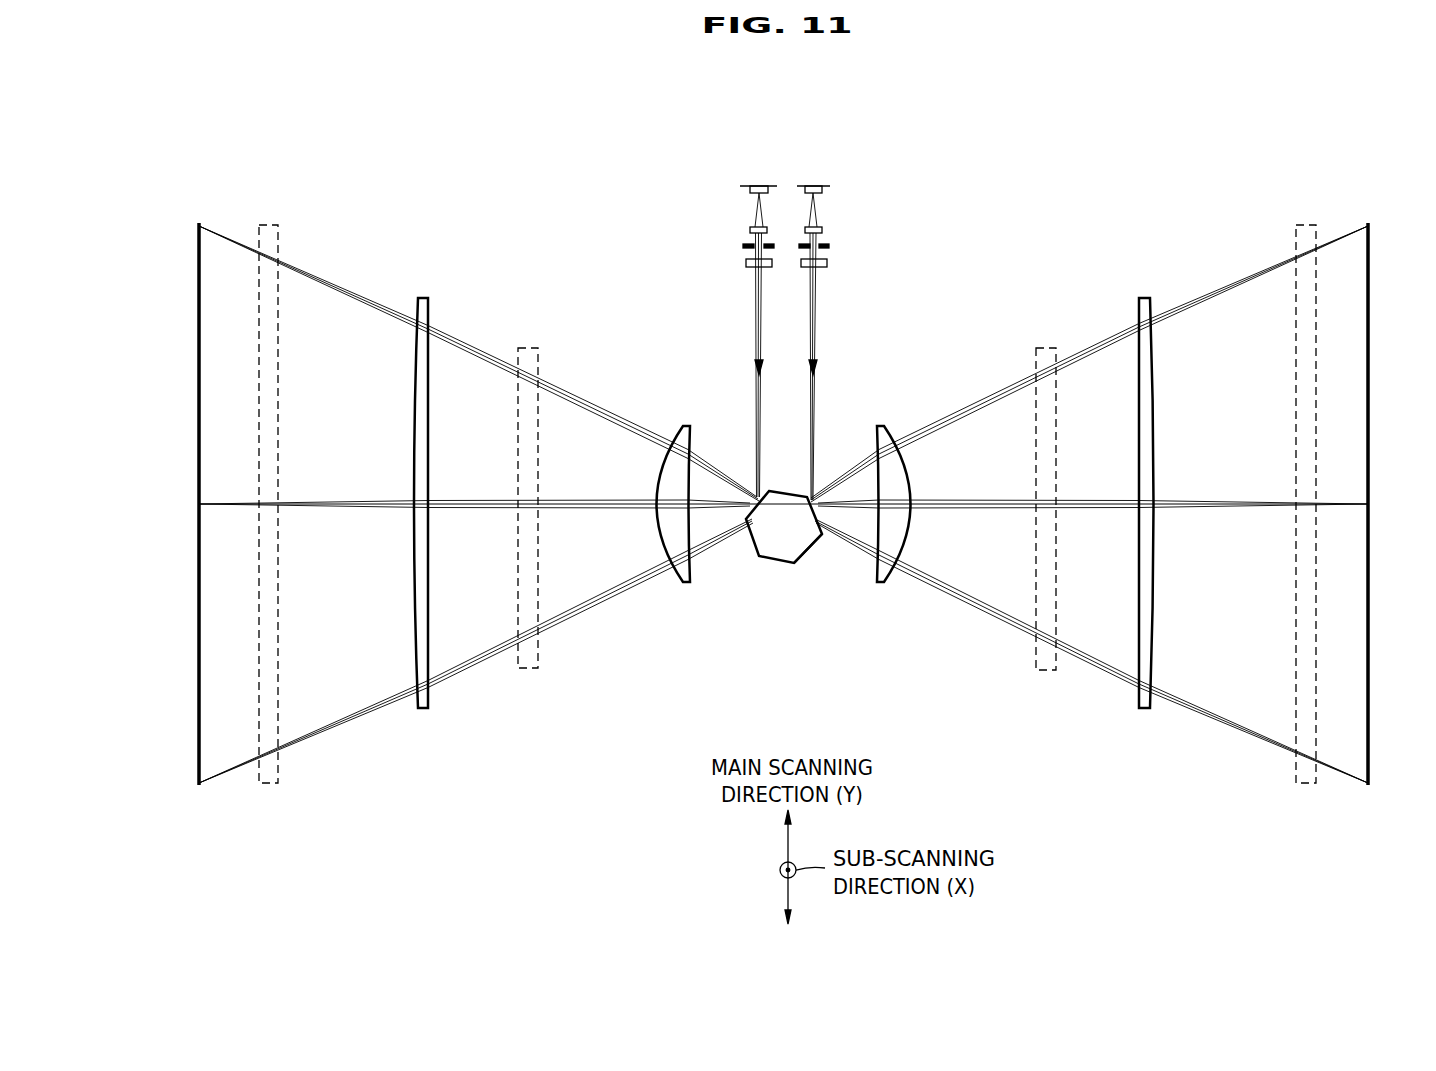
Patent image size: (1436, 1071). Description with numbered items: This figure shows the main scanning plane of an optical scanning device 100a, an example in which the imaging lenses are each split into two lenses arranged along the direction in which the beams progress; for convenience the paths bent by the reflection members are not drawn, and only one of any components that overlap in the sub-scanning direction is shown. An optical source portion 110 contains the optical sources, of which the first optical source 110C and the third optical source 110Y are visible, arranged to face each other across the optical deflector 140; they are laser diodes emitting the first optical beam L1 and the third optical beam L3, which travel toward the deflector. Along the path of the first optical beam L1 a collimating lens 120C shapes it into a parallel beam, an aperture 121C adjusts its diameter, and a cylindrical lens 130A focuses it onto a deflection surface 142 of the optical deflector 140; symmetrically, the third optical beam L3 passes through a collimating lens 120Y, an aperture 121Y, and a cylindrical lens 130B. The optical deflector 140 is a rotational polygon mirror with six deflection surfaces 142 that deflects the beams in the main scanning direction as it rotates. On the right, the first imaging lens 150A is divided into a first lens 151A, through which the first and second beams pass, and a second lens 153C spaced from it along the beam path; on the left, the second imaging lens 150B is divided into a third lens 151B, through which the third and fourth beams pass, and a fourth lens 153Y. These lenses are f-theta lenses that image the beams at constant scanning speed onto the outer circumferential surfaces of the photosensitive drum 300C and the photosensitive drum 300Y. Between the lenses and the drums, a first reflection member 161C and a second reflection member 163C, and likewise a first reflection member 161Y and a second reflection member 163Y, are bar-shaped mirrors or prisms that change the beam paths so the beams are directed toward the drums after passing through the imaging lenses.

The optical scanning device 100a is at (338, 101).
The optical source portion 110 is at (940, 107).
The third optical source 110Y is at (757, 186).
The first optical source 110C is at (815, 186).
The collimating lens 120Y is at (750, 228).
The collimating lens 120C is at (822, 228).
The aperture 121Y is at (743, 247).
The aperture 121C is at (829, 247).
The cylindrical lens 130A is at (827, 266).
The cylindrical lens 130B is at (746, 266).
The optical deflector 140 is at (786, 555).
The deflection surface 142 is at (811, 549).
The first imaging lens 150A is at (952, 716).
The second imaging lens 150B is at (643, 709).
The first lens 151A is at (879, 583).
The third lens 151B is at (688, 583).
The fourth lens 153Y is at (420, 710).
The second lens 153C is at (1140, 710).
The first reflection member 161Y is at (528, 350).
The first reflection member 161C is at (1045, 355).
The second reflection member 163Y is at (268, 783).
The second reflection member 163C is at (1308, 783).
The photosensitive drum 300Y is at (199, 263).
The photosensitive drum 300C is at (1368, 263).
The first optical beam L1 is at (852, 346).
The third optical beam L3 is at (719, 345).